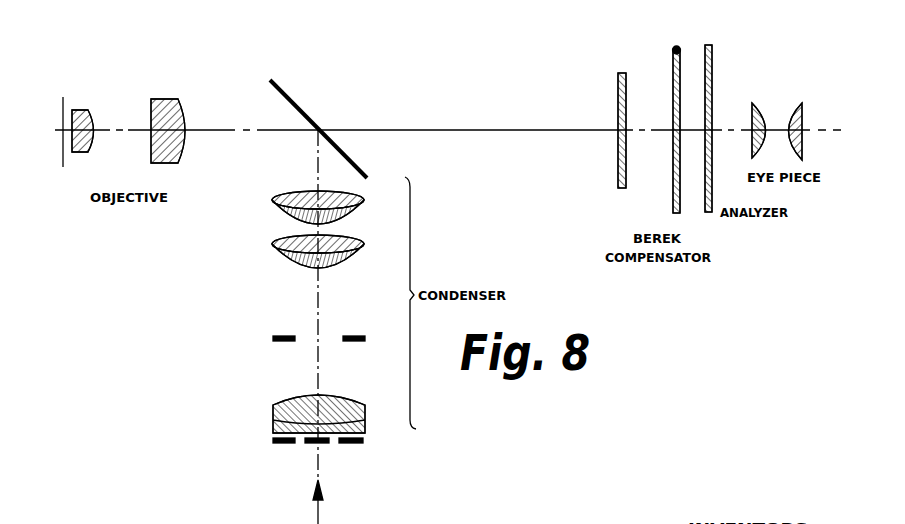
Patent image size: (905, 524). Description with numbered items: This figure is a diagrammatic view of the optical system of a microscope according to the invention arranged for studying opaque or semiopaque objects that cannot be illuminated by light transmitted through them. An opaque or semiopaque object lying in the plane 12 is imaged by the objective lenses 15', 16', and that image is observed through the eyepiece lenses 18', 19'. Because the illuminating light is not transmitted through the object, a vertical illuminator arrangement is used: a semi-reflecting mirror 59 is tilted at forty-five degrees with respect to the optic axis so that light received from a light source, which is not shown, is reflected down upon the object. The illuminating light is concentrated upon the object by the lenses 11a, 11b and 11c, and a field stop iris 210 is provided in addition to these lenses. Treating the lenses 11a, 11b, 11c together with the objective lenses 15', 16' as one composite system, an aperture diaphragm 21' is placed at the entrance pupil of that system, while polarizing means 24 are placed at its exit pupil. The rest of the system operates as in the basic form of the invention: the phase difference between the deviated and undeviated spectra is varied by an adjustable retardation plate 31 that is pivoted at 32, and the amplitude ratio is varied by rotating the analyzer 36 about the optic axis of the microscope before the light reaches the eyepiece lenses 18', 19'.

The object plane 12 is at (64, 98).
The objective lens 15' is at (97, 114).
The objective lens 16' is at (168, 114).
The semi-reflecting mirror 59 is at (295, 100).
The lens 11a is at (364, 200).
The lens 11b is at (364, 244).
The lens 11c is at (365, 405).
The field stop iris 210 is at (355, 336).
The aperture diaphragm 21' is at (339, 423).
The polarizing means 24 is at (626, 186).
The adjustable retardation plate 31 is at (673, 200).
The pivot 32 is at (676, 46).
The analyzer 36 is at (712, 55).
The eyepiece lens 18' is at (771, 116).
The eyepiece lens 19' is at (815, 123).